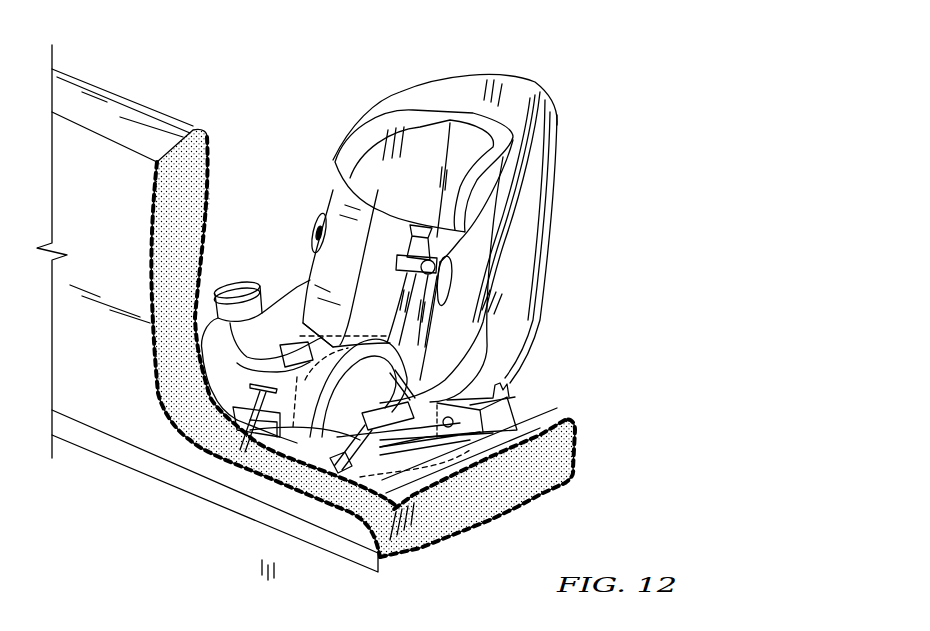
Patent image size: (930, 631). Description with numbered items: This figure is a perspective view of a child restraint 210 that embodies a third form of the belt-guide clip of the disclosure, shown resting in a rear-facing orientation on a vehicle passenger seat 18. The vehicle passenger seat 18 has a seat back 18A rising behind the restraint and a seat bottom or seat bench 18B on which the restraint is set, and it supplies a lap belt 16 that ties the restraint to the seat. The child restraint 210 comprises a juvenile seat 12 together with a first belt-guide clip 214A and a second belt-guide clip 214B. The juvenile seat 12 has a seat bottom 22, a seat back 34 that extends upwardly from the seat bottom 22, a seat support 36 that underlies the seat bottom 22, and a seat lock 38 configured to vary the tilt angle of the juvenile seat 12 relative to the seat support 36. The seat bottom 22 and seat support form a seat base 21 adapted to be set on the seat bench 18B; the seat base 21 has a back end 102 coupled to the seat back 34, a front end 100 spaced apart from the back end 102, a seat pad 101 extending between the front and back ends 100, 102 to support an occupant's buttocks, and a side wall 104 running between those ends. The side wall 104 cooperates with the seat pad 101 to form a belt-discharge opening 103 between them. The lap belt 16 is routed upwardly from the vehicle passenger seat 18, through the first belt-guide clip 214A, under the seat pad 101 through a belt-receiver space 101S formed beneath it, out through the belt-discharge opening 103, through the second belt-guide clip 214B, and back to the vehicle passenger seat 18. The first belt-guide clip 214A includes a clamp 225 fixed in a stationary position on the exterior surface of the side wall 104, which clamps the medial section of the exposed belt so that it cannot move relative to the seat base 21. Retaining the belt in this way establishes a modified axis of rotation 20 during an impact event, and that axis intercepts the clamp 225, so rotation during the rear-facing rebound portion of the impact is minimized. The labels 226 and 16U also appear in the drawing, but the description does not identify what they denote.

The child restraint 210 is at (538, 59).
The juvenile seat 12 is at (560, 193).
The seat back 34 is at (526, 222).
The vehicle passenger seat 18 is at (192, 128).
The seat back 18A is at (117, 249).
The seat bottom 18B is at (507, 492).
The second belt-guide clip 214B is at (260, 330).
The seat pad 101 is at (293, 343).
The front end 100 is at (230, 362).
The belt-discharge opening 103 is at (410, 353).
The back end 102 is at (512, 398).
The seat bottom 22 is at (500, 583).
The belt-receiver space 101S is at (297, 393).
The seat lock 38 is at (245, 455).
The seat support 36 is at (300, 440).
The side wall 104 is at (340, 440).
The lap belt 16 is at (405, 450).
The first belt-guide clip 214A is at (400, 468).
The modified axis of rotation 20 is at (410, 430).
The clamp 225 is at (233, 630).
The connector arm 226 is at (76, 624).
The seat base 21 is at (267, 590).
The upper base 16U is at (600, 619).